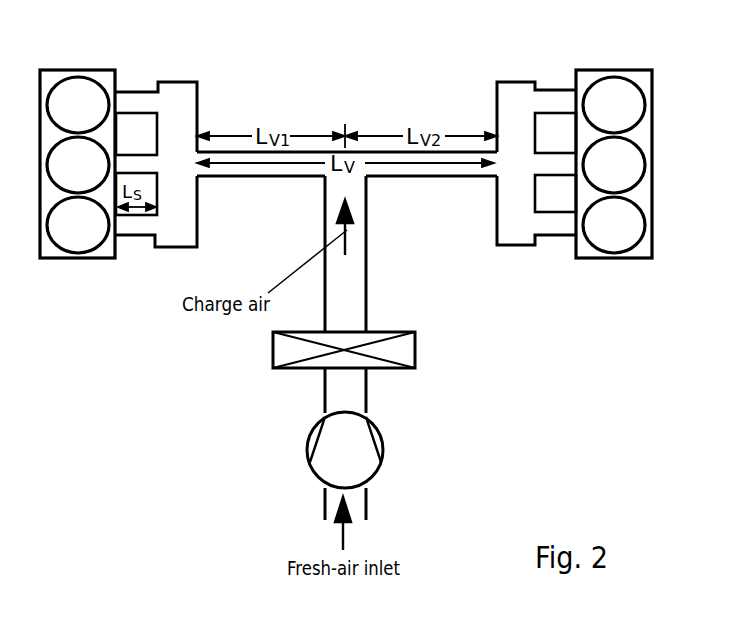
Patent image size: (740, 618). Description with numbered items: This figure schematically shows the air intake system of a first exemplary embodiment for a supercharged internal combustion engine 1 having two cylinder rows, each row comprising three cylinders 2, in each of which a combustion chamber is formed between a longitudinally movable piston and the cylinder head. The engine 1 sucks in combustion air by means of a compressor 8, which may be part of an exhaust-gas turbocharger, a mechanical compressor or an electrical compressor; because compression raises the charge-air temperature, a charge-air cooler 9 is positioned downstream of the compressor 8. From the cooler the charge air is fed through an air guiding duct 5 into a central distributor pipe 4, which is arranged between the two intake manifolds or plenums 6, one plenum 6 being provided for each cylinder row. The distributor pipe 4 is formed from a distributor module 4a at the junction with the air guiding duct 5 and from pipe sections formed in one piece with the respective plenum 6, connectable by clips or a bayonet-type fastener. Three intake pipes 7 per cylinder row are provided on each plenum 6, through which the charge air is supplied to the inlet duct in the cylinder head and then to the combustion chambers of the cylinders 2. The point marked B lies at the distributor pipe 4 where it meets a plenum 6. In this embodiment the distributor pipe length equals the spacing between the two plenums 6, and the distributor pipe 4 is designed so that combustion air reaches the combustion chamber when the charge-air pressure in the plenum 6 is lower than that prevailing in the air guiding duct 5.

The internal combustion engine 1 is at (563, 429).
The cylinder 2 is at (70, 120).
The distributor pipe 4 is at (276, 173).
The distributor module 4a is at (350, 192).
The air guiding duct 5 is at (366, 282).
The intake manifold or plenum 6 is at (173, 92).
The intake pipe 7 is at (133, 100).
The compressor 8 is at (382, 440).
The charge-air cooler 9 is at (415, 348).
The branch point B is at (502, 163).